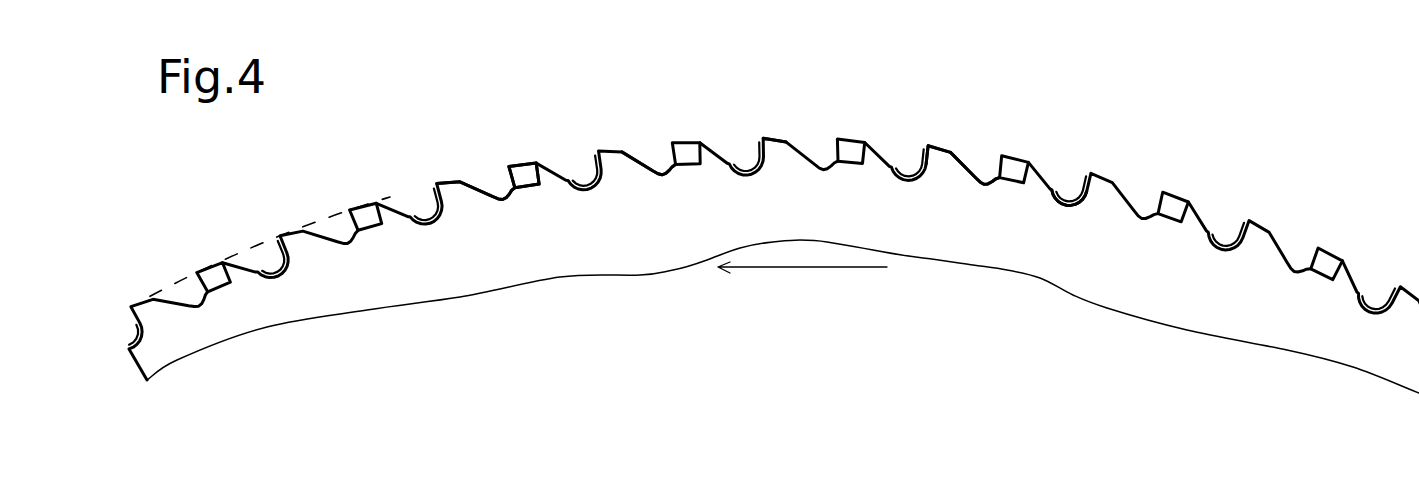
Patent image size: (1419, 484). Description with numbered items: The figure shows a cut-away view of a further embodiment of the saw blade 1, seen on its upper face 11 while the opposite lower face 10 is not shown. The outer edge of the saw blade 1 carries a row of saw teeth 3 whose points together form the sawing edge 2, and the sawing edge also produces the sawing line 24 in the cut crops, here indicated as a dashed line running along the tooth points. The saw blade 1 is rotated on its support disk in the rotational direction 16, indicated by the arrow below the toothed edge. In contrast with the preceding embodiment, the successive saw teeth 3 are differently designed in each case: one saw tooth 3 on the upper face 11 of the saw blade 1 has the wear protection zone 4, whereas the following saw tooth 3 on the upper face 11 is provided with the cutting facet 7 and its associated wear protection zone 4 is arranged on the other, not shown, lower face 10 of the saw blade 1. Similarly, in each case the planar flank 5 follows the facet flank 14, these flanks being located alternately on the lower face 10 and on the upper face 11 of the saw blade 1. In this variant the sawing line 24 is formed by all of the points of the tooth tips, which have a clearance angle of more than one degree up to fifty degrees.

The saw blade 1 is at (1101, 252).
The sawing edge 2 is at (1075, 143).
The saw tooth 3 is at (540, 182).
The wear protection zone 4 is at (360, 212).
The planar flank 5 is at (694, 178).
The cutting facet 7 is at (580, 187).
The lower face 10 is at (1002, 184).
The upper face 11 is at (908, 139).
The facet flank 14 is at (779, 152).
The rotational direction 16 is at (758, 268).
The sawing line 24 is at (178, 283).